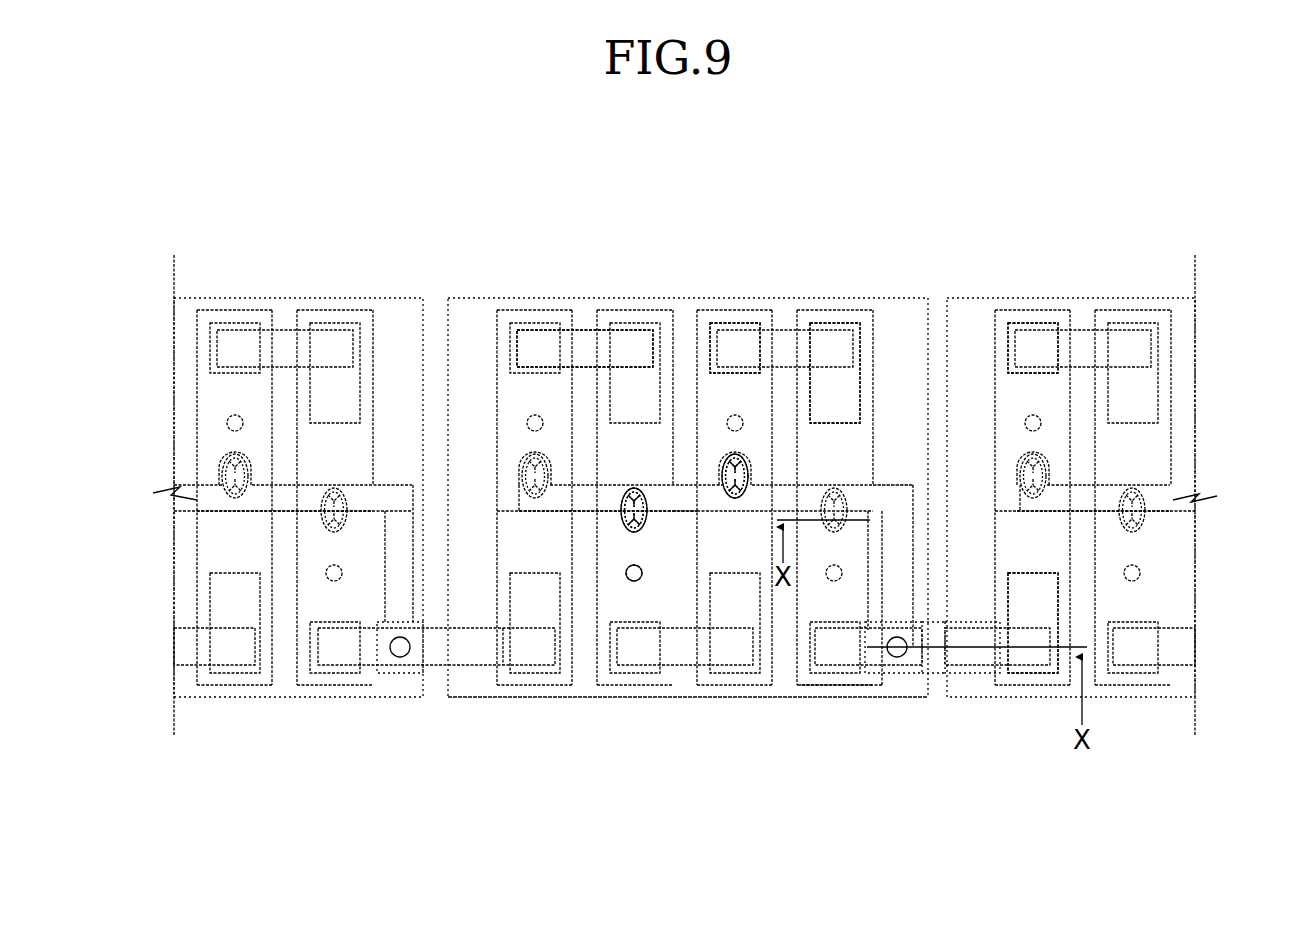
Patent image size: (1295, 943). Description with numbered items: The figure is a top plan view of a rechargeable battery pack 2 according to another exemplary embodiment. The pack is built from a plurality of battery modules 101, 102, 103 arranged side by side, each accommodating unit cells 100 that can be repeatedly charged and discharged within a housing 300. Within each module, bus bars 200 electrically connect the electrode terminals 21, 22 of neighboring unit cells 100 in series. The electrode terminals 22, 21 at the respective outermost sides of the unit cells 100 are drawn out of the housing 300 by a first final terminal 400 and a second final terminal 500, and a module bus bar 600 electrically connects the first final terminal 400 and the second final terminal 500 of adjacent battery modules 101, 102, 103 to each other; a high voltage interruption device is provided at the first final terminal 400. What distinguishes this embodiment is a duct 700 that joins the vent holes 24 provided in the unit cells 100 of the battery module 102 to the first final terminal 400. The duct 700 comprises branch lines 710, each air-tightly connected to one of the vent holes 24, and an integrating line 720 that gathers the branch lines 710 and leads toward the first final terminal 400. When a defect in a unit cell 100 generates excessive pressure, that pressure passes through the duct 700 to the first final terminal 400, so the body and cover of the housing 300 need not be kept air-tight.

The rechargeable battery pack 2 is at (506, 185).
The electrode terminal 21 is at (832, 325).
The electrode terminal 22 is at (737, 325).
The vent hole 24 is at (738, 494).
The unit cell 100 is at (873, 443).
The battery module 101 is at (283, 712).
The battery module 102 is at (802, 712).
The battery module 103 is at (1133, 718).
The bus bar 200 is at (585, 345).
The housing 300 is at (654, 298).
The first final terminal 400 is at (890, 680).
The second final terminal 500 is at (973, 673).
The module bus bar 600 is at (930, 675).
The duct 700 is at (639, 651).
The branch line 710 is at (636, 550).
The integrating line 720 is at (687, 513).